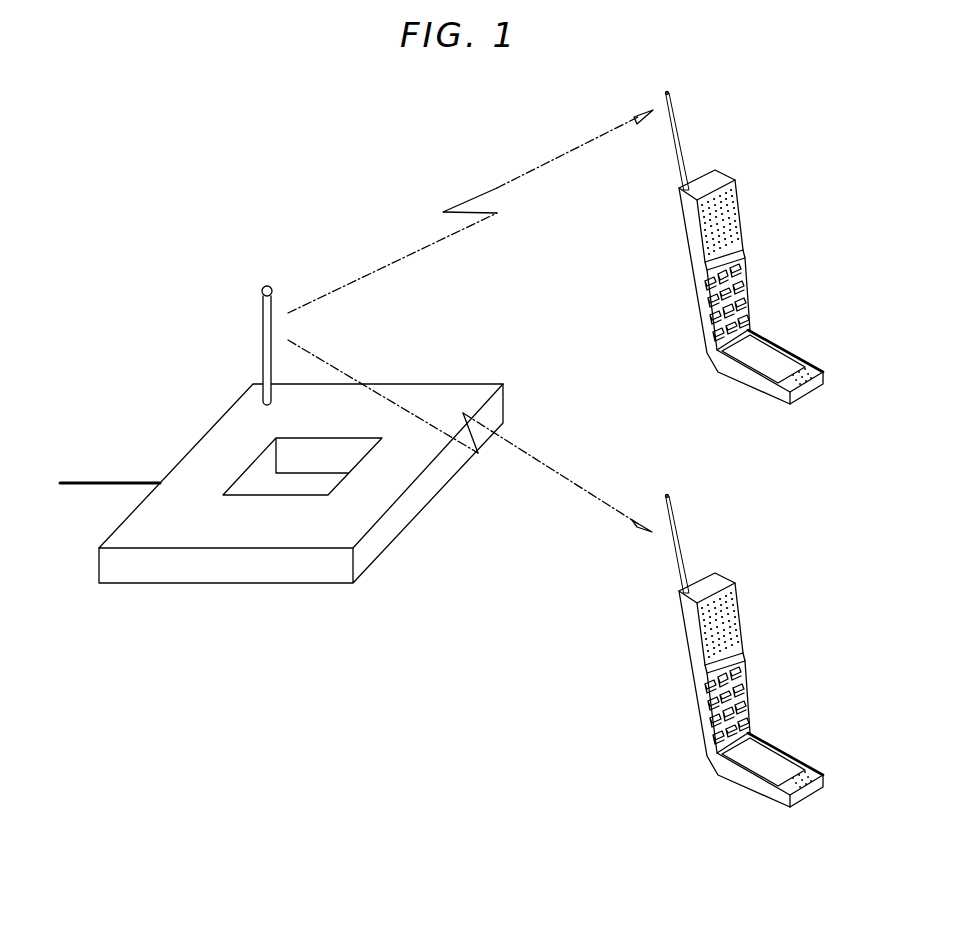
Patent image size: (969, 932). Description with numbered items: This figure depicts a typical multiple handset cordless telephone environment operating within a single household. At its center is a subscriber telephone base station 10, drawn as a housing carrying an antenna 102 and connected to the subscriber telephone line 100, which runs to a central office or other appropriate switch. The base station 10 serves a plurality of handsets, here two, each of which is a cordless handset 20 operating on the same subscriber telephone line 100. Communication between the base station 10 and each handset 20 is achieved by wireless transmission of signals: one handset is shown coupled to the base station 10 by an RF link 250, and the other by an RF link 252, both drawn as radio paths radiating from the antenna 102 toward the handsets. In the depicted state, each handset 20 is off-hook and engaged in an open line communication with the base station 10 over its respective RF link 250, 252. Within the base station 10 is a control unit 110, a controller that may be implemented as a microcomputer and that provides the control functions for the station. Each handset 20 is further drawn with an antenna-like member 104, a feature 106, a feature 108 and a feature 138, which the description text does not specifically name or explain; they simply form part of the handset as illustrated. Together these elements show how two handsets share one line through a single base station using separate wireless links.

The subscriber telephone base station 10 is at (301, 451).
The handset 20 is at (692, 265).
The subscriber telephone line 100 is at (107, 481).
The antenna 102 is at (270, 284).
The handset antenna 104 is at (669, 494).
The speaker / earpiece 106 is at (722, 224).
The flip cover with display 108 is at (805, 368).
The control unit 110 is at (320, 488).
The keypad 138 is at (743, 300).
The RF link 250 is at (490, 185).
The RF link 252 is at (580, 487).